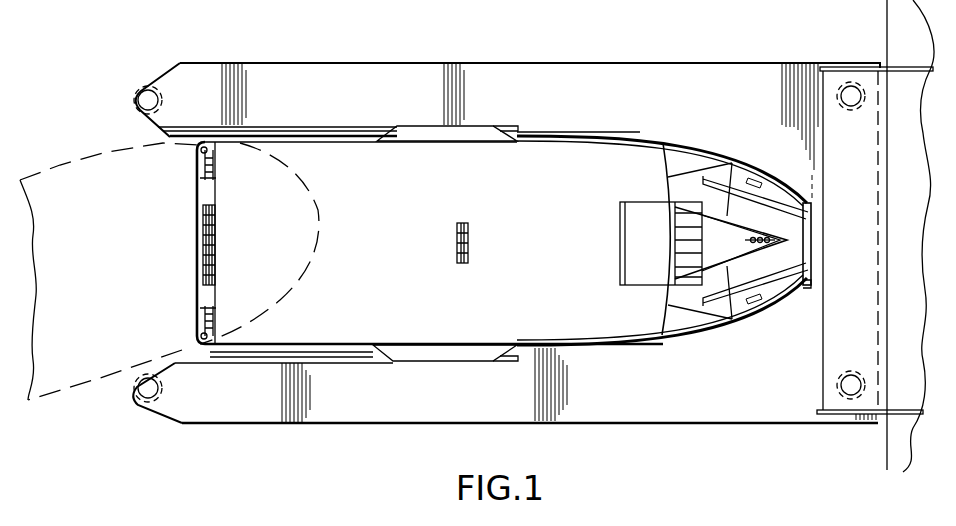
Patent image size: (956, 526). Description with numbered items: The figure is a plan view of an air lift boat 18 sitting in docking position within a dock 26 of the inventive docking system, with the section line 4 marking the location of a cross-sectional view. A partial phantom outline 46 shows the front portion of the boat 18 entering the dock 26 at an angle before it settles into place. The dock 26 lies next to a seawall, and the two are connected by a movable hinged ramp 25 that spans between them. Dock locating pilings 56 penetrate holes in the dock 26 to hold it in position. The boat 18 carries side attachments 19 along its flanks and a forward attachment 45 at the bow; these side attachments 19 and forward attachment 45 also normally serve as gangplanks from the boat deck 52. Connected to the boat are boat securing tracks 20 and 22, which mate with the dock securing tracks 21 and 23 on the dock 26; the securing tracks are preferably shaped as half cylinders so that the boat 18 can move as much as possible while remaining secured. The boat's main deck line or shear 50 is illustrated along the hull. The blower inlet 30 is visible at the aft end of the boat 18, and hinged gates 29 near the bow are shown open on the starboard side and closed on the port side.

The air lift boat 18 is at (548, 231).
The side attachments 19 is at (470, 134).
The boat securing track 20 is at (403, 362).
The dock securing track 21 is at (300, 132).
The boat securing track 22 is at (807, 203).
The dock securing track 23 is at (810, 205).
The movable hinged ramp 25 is at (870, 311).
The dock 26 is at (700, 109).
The hinged gates 29 is at (806, 228).
The blower inlet 30 is at (203, 240).
The forward attachment 45 is at (803, 272).
The phantom outline 46 is at (97, 150).
The main deck line or shear 50 is at (582, 137).
The boat deck 52 is at (690, 168).
The dock locating pilings 56 is at (140, 90).
The section line 4- 4 is at (471, 304).